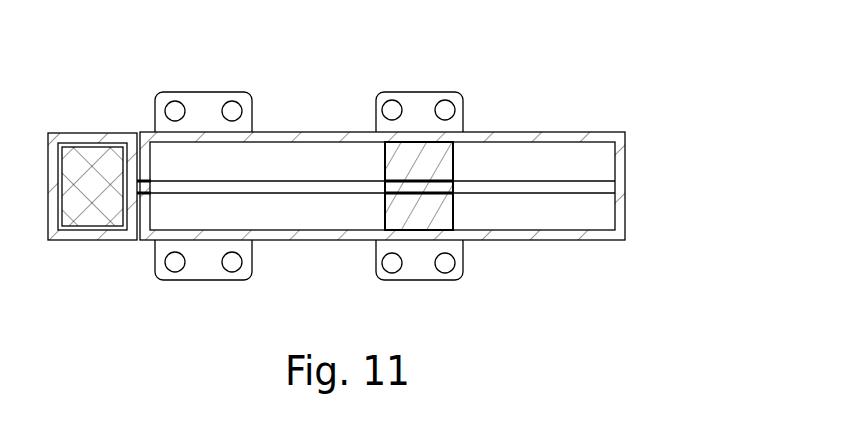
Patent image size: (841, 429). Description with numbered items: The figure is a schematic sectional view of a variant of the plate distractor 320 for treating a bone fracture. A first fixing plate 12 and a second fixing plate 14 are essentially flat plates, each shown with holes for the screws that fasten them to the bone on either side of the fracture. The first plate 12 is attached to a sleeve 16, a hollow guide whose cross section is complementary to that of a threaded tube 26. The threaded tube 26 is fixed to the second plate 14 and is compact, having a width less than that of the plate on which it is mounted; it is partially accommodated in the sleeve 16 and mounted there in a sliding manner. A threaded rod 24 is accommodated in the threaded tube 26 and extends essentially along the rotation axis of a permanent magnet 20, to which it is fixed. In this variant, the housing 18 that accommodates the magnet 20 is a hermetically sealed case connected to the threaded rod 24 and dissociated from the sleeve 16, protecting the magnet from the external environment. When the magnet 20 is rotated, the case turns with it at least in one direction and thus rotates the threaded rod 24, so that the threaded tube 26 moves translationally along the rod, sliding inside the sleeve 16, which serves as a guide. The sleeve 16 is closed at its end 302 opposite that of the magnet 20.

The first fixing plate 12 is at (196, 107).
The second fixing plate 14 is at (418, 110).
The sleeve 16 is at (532, 242).
The hollow housing 18 is at (104, 145).
The permanent magnet 20 is at (94, 205).
The threaded rod 24 is at (347, 185).
The threaded tube 26 is at (441, 135).
The end of the sleeve 302 is at (627, 200).
The sensor device 320 is at (308, 101).